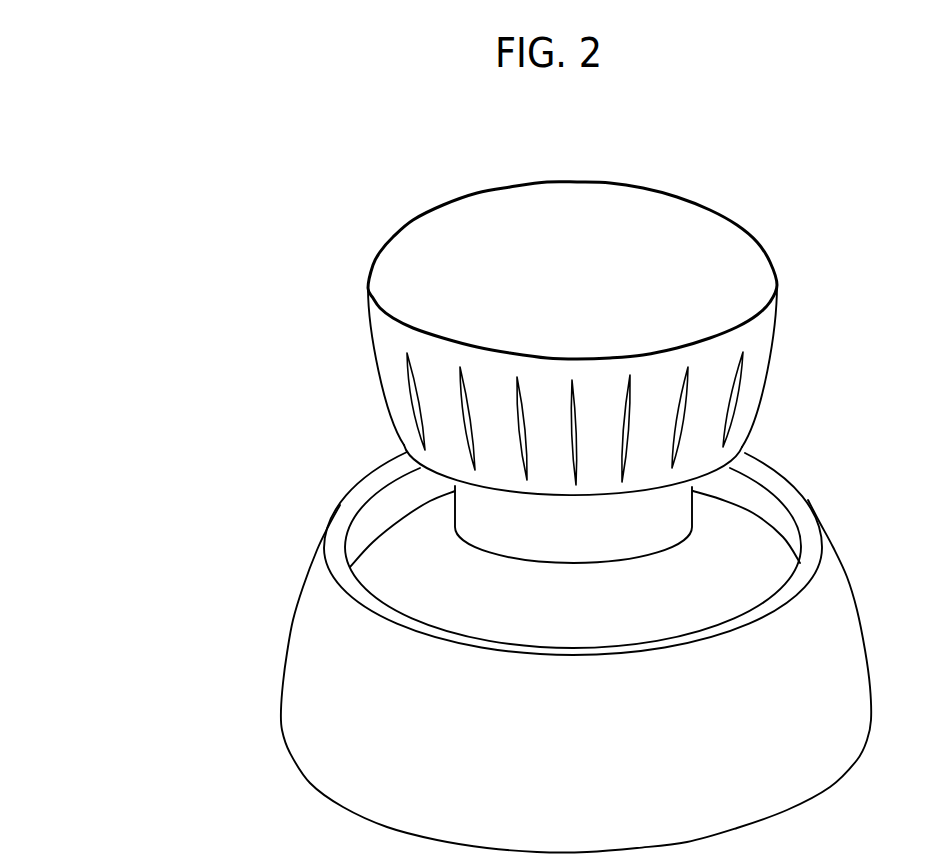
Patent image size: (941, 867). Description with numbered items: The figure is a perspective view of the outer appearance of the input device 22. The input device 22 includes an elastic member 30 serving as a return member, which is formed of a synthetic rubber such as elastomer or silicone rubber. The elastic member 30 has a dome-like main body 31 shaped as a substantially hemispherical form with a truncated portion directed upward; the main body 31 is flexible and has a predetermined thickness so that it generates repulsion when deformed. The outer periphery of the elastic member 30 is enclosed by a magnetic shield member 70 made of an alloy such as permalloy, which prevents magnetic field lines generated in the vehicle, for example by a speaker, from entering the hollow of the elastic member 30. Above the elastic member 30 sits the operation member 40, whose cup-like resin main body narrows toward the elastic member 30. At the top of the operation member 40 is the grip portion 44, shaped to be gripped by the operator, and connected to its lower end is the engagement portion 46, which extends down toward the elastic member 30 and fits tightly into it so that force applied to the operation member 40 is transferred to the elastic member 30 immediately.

The input device 22 is at (235, 177).
The operation member 40 is at (417, 213).
The grip portion 44 is at (767, 335).
The engagement portion 46 is at (553, 542).
The elastic member 30 is at (755, 548).
The main body 31 is at (392, 557).
The magnetic shield member 70 is at (311, 717).